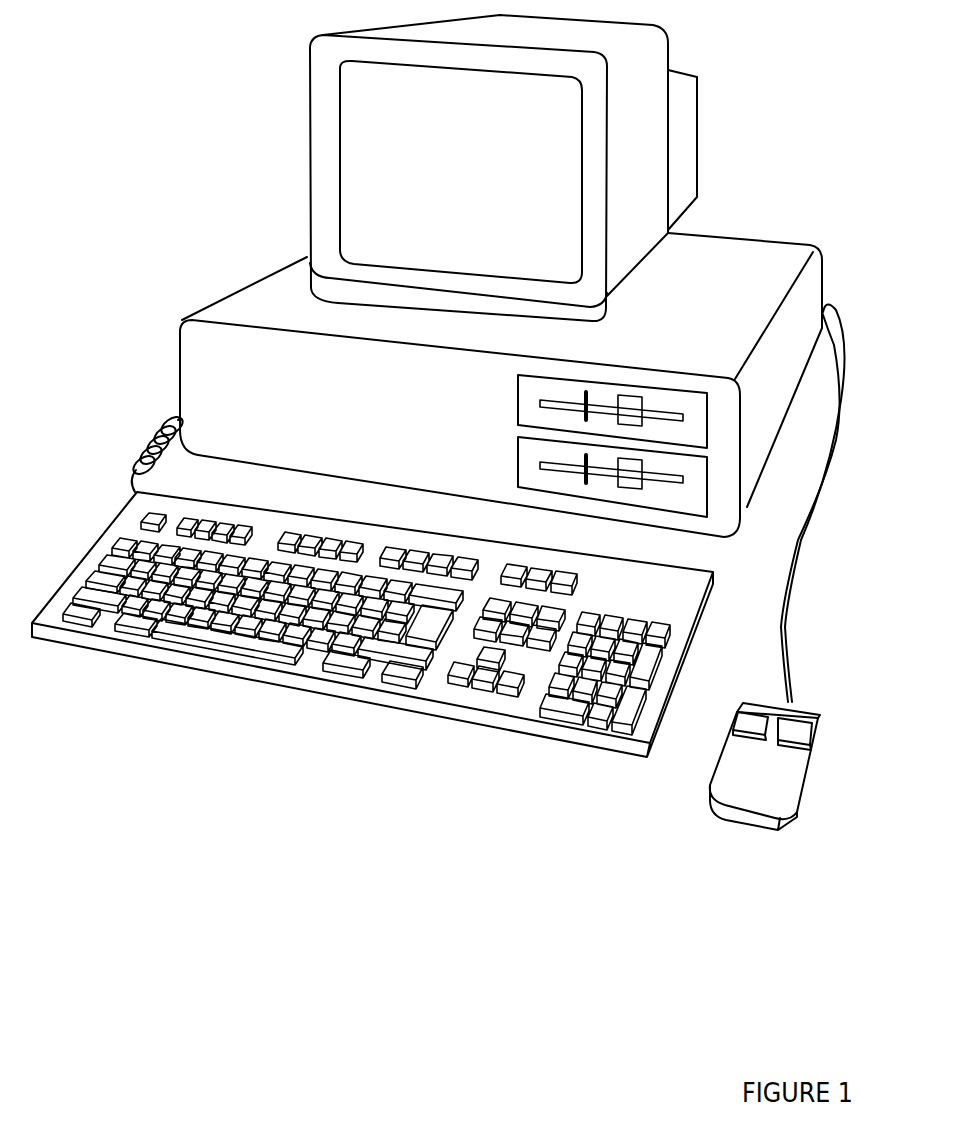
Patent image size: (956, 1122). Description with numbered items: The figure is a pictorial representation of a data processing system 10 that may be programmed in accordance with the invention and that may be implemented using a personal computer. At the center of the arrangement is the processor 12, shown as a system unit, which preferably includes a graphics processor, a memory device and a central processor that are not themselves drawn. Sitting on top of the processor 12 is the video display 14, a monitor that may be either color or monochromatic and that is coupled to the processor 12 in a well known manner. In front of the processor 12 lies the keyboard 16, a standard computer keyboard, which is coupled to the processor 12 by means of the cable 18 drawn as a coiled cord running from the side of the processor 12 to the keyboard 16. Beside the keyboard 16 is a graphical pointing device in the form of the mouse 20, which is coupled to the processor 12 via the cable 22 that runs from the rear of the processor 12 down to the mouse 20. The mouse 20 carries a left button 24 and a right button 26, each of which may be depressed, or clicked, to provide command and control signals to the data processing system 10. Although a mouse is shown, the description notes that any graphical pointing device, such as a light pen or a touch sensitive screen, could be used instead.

The data processing system 10 is at (212, 142).
The processor 12 is at (748, 508).
The video display 14 is at (704, 127).
The keyboard 16 is at (197, 643).
The cable 18 is at (137, 417).
The mouse 20 is at (793, 812).
The cable 22 is at (787, 645).
The left button 24 is at (743, 705).
The right button 26 is at (820, 717).